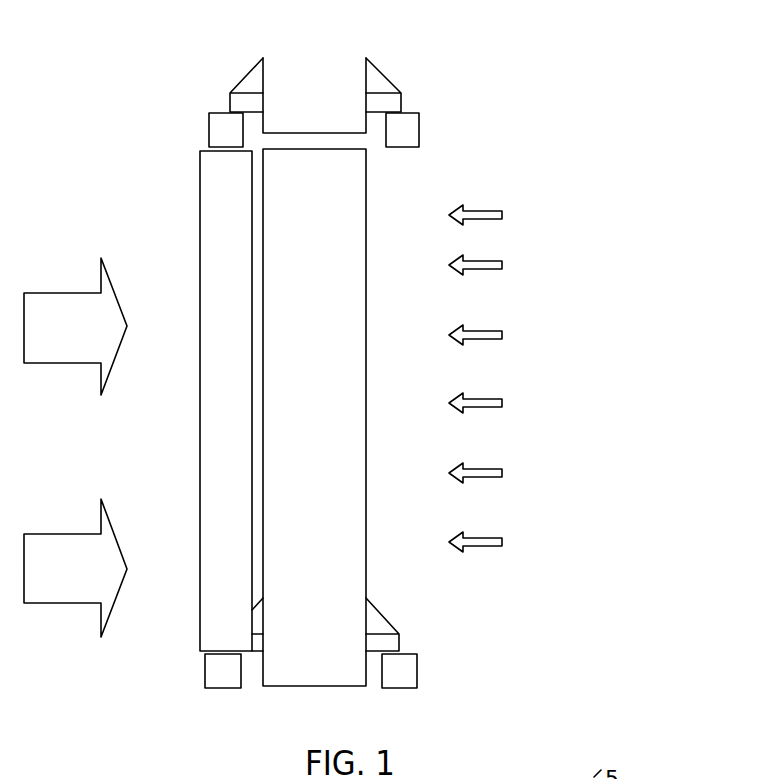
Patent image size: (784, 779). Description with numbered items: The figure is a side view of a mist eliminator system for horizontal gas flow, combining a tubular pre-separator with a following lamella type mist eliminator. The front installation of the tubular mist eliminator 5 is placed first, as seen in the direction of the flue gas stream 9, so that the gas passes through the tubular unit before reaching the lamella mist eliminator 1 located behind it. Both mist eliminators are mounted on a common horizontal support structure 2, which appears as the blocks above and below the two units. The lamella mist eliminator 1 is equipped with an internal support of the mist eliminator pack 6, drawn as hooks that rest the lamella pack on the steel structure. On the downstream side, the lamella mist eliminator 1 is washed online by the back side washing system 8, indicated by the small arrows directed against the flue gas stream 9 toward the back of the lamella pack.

The lamella mist eliminator 1 is at (298, 428).
The horizontal support structure 2 is at (408, 127).
The front installation of the tubular mist eliminator 5 is at (195, 497).
The internal support of the mist eliminator pack 6 is at (383, 633).
The back side washing system 8 is at (485, 404).
The flue gas stream 9 is at (58, 570).